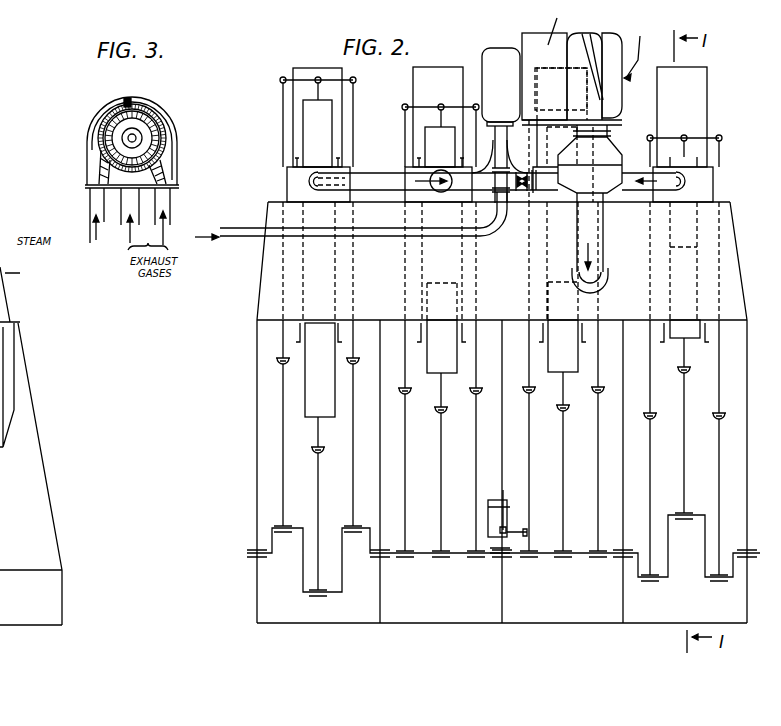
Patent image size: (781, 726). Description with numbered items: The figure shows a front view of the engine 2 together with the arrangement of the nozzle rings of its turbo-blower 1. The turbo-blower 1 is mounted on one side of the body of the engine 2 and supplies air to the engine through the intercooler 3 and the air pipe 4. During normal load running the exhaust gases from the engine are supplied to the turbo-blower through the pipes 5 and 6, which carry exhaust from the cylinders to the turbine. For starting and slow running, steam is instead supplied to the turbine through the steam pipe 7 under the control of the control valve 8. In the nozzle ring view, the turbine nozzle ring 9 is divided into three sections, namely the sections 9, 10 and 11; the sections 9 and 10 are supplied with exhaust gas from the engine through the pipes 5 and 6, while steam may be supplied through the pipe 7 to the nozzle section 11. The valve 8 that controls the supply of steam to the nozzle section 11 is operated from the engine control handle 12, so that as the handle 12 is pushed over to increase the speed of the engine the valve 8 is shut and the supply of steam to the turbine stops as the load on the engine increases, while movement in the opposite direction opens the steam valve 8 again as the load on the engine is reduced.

In FIG. 2, the turbo-blower 1 is at (537, 53).
In FIG. 2, the engine 2 is at (725, 258).
In FIG. 2, the intercooler 3 is at (604, 163).
In FIG. 2, the air pipe 4 is at (589, 235).
In FIG. 2, the exhaust pipe 5 is at (386, 176).
In FIG. 3, the exhaust pipe 5 is at (163, 203).
In FIG. 2, the exhaust pipe 6 is at (633, 180).
In FIG. 3, the exhaust pipe 6 is at (128, 203).
In FIG. 2, the steam pipe 7 is at (484, 238).
In FIG. 3, the steam pipe 7 is at (93, 207).
In FIG. 2, the control valve 8 is at (510, 200).
In FIG. 3, the turbine nozzle ring 9 is at (167, 125).
In FIG. 3, the nozzle ring section 10 is at (117, 173).
In FIG. 3, the nozzle section 11 is at (100, 143).
In FIG. 2, the engine control handle 12 is at (488, 515).